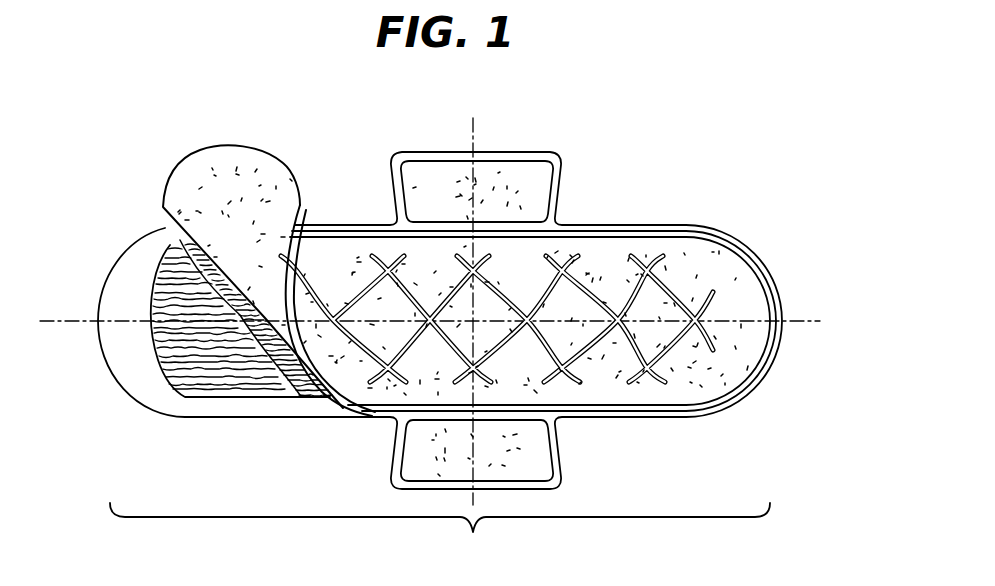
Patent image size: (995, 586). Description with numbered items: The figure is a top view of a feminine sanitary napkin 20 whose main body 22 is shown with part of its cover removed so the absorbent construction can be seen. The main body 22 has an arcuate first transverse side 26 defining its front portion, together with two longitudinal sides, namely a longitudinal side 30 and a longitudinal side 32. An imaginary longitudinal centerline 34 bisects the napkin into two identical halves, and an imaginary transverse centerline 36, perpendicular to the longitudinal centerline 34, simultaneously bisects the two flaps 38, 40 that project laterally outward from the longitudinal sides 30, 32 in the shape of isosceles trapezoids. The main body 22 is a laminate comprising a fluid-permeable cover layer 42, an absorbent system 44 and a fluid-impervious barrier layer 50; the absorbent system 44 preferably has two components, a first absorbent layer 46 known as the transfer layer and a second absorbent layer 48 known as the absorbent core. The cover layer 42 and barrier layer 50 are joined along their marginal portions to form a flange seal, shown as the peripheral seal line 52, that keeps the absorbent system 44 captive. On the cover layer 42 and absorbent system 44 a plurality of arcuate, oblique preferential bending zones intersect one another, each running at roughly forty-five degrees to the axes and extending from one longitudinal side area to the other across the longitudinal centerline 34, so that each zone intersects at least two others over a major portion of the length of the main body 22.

The sanitary napkin 20 is at (541, 120).
The main body 22 is at (440, 535).
The first transverse side 26 is at (775, 278).
The longitudinal side 30 is at (584, 223).
The longitudinal side 32 is at (580, 421).
The longitudinal centerline 34 is at (80, 320).
The transverse centerline 36 is at (470, 128).
The flap 38 is at (562, 155).
The flap 40 is at (551, 479).
The cover layer 42 is at (262, 148).
The absorbent system 44 is at (167, 263).
The first absorbent layer 46 is at (275, 363).
The second absorbent layer 48 is at (195, 380).
The barrier layer 50 is at (112, 356).
The peripheral seal line 52 is at (670, 237).